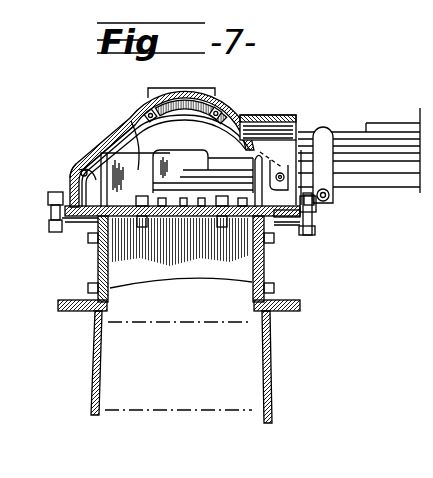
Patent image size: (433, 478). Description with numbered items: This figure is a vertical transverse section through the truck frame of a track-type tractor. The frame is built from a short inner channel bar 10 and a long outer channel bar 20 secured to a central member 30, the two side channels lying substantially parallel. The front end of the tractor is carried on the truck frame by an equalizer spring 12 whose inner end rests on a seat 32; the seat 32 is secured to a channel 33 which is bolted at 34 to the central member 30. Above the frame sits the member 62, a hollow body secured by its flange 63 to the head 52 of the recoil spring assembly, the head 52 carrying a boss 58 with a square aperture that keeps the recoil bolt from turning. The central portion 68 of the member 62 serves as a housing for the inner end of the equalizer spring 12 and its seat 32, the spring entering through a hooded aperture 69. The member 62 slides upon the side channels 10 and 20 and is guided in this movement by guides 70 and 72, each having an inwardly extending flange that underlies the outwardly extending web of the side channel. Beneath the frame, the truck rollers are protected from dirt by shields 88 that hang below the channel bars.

The inner channel bar 10 is at (268, 266).
The equalizer spring 12 is at (386, 127).
The outer channel bar 20 is at (98, 262).
The central member 30 is at (233, 277).
The seat 32 is at (193, 207).
The channel 33 is at (127, 122).
The bolt 34 is at (143, 228).
The head 52 is at (214, 103).
The boss 58 is at (170, 170).
The member 62 is at (241, 117).
The flange 63 is at (88, 153).
The central portion 68 is at (104, 135).
The hooded aperture 69 is at (297, 128).
The guide 70 is at (48, 218).
The guide 72 is at (316, 222).
The shield 88 is at (95, 348).